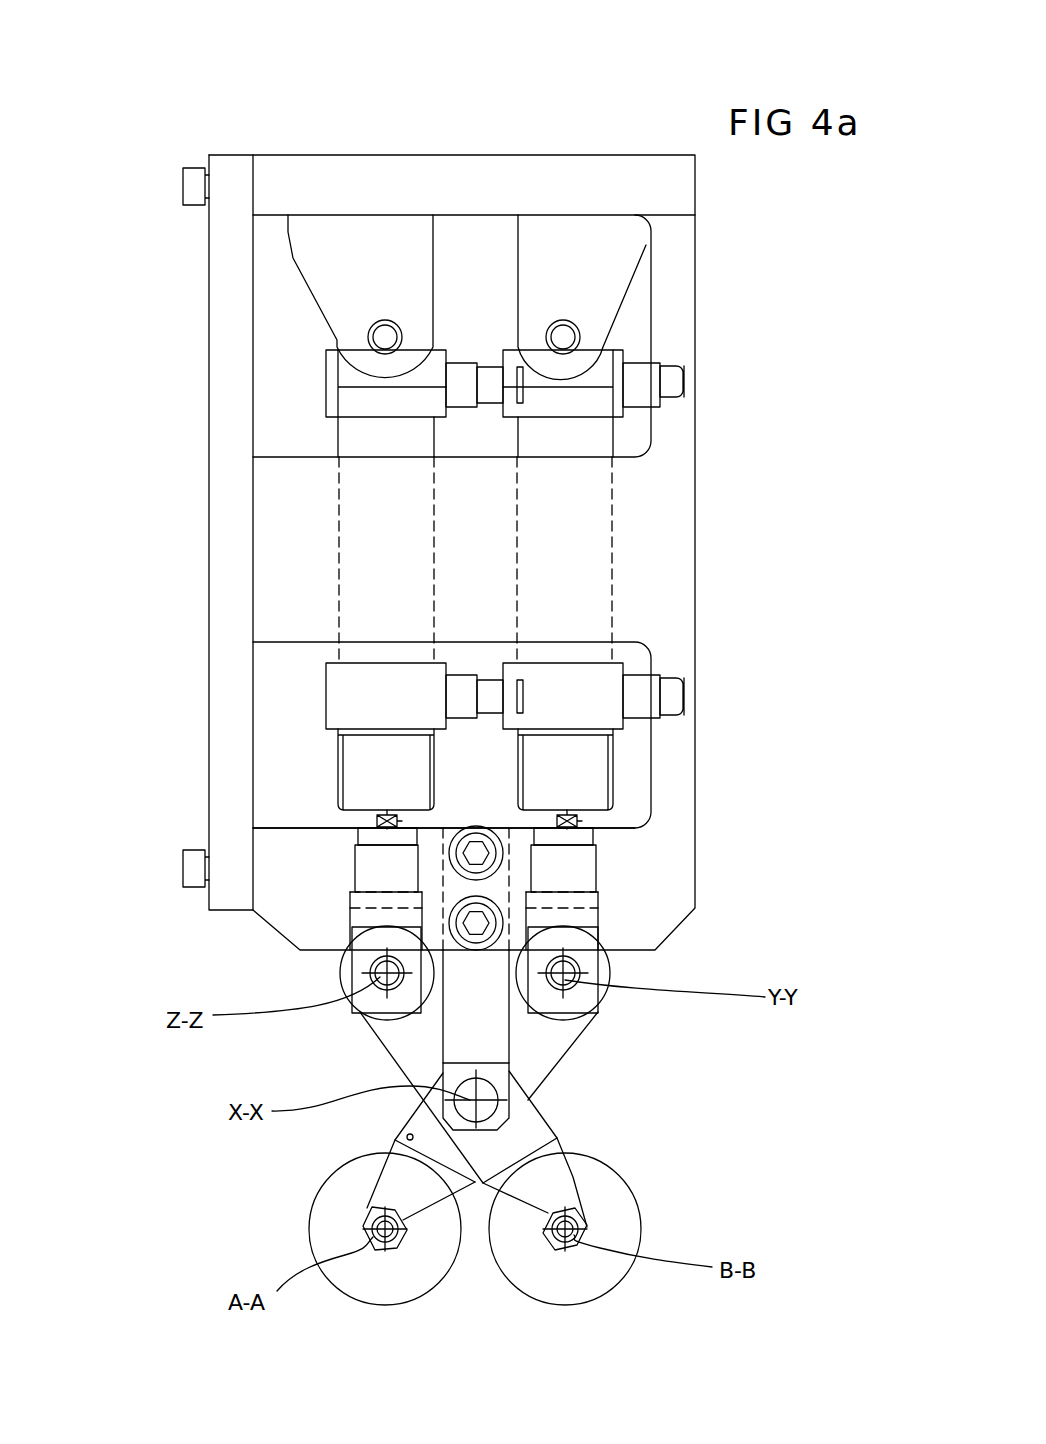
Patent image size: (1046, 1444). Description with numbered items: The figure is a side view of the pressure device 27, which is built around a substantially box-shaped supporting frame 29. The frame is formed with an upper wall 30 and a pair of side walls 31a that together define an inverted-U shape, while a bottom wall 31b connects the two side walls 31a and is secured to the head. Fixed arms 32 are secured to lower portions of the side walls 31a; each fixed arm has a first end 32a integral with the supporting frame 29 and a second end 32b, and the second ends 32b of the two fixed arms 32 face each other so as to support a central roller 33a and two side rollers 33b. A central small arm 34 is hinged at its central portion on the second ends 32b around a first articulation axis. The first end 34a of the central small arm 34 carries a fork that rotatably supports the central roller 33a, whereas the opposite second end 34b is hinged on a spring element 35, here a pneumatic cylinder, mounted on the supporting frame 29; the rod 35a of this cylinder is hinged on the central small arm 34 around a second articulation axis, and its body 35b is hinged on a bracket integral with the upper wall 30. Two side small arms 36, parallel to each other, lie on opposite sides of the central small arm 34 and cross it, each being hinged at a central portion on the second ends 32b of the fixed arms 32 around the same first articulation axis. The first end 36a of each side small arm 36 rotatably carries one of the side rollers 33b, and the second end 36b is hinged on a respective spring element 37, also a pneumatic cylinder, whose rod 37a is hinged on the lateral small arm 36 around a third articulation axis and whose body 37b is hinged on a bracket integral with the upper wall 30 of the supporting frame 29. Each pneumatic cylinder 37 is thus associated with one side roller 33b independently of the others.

The pressure device 27 is at (178, 549).
The supporting frame 29 is at (180, 287).
The upper wall 30 is at (453, 177).
The side walls 31a is at (672, 284).
The bottom wall 31b is at (218, 383).
The fixed arms 32 is at (506, 1038).
The first end of fixed arm 32a is at (495, 892).
The second end of fixed arm 32b is at (500, 1080).
The central roller 33a is at (300, 1230).
The side rollers 33b is at (645, 1186).
The central small arm 34 is at (592, 1034).
The first end of central small arm 34a is at (400, 1187).
The second end of central small arm 34b is at (610, 968).
The spring element 35 is at (635, 766).
The rod of pneumatic cylinder 35a is at (585, 818).
The body of pneumatic cylinder 35b is at (583, 442).
The side small arms 36 is at (376, 1056).
The first end of lateral small arm 36a is at (533, 1213).
The second end of lateral small arm 36b is at (345, 968).
The spring elements 37 is at (296, 703).
The rod of pneumatic cylinder 37a is at (372, 820).
The body of pneumatic cylinder 37b is at (362, 443).